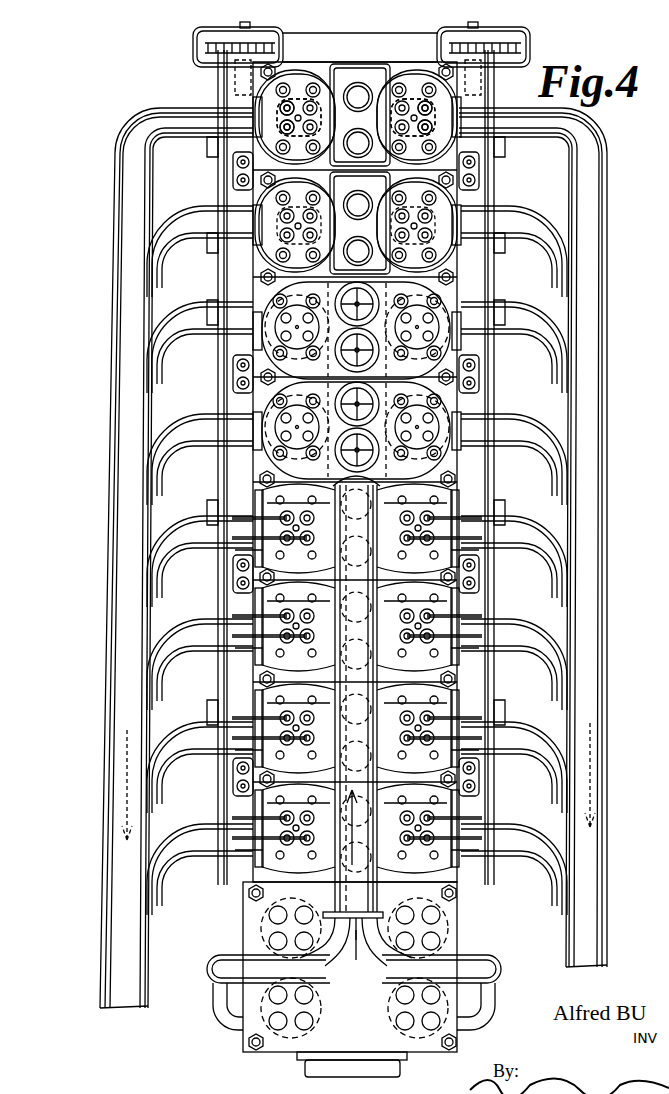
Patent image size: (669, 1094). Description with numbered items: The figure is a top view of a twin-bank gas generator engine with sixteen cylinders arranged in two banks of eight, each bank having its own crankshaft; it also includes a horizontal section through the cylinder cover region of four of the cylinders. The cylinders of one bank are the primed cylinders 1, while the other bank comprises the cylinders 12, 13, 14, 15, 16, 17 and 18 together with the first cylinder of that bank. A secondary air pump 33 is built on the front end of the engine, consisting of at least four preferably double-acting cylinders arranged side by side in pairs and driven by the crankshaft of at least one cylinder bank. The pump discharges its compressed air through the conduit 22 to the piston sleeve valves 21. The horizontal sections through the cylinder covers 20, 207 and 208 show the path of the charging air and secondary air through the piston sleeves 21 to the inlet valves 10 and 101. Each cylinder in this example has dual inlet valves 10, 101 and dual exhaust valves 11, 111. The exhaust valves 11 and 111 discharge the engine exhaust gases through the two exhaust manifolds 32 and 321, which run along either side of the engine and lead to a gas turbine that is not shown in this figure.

The engine cylinder 1 is at (267, 158).
The inlet valve 10 is at (312, 112).
The inlet valve 101 is at (404, 112).
The exhaust valve 11 is at (286, 106).
The exhaust valve 111 is at (430, 125).
The engine cylinder 12 is at (457, 754).
The engine cylinder 13 is at (457, 652).
The engine cylinder 14 is at (457, 554).
The engine cylinder 15 is at (457, 447).
The engine cylinder 16 is at (457, 345).
The engine cylinder 17 is at (457, 248).
The engine cylinder 18 is at (457, 148).
The cylinder cover 20 is at (292, 72).
The cylinder cover 207 is at (460, 200).
The cylinder cover 208 is at (420, 72).
The piston sleeve valve 21 is at (357, 169).
The conduit 22 is at (360, 950).
The exhaust manifold 32 is at (128, 941).
The exhaust manifold 321 is at (590, 938).
The secondary air pump 33 is at (352, 967).